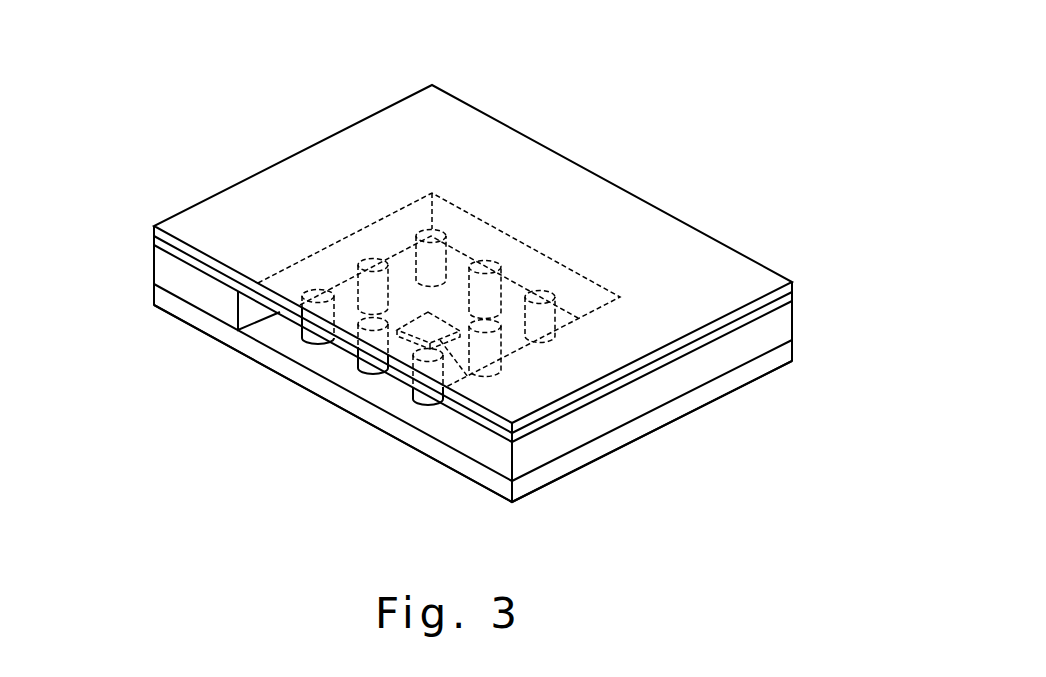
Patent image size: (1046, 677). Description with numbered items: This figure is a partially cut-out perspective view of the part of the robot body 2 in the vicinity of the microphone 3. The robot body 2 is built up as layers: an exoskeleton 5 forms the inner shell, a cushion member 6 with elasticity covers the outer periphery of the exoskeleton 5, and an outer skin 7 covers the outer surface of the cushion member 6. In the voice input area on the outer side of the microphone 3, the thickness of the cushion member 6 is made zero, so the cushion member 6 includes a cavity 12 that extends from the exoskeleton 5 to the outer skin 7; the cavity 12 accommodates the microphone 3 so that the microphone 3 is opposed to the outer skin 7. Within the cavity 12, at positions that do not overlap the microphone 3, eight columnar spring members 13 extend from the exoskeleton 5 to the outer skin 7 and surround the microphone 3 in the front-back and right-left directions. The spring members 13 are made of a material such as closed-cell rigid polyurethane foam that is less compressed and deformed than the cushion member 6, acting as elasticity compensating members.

The robot body 2 is at (670, 99).
The microphone 3 is at (467, 377).
The exoskeleton 5 is at (157, 296).
The cushion member 6 is at (160, 268).
The outer skin 7 is at (130, 232).
The cavity 12 is at (252, 312).
The spring members 13 is at (467, 258).